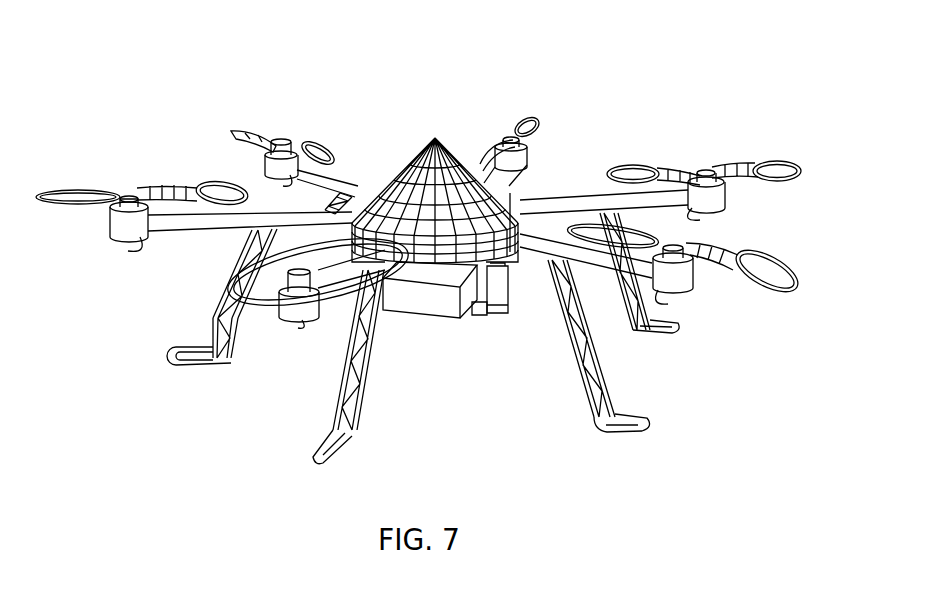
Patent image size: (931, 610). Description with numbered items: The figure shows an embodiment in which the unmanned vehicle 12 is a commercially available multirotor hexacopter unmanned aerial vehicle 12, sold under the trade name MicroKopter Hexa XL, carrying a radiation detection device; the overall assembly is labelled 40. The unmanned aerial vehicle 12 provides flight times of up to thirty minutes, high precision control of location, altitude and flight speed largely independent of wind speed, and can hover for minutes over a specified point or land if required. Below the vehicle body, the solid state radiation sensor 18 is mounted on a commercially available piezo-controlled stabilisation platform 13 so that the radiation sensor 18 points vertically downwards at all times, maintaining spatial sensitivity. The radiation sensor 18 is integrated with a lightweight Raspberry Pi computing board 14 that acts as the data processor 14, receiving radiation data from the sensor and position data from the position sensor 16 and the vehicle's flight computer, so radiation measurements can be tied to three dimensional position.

The unmanned aerial vehicle 40 is at (673, 86).
The unmanned aerial vehicle 12 is at (435, 158).
The position sensor 16 is at (449, 140).
The computing board 14 is at (430, 337).
The solid state radiation sensor 18 is at (421, 327).
The stabilisation platform 13 is at (509, 293).